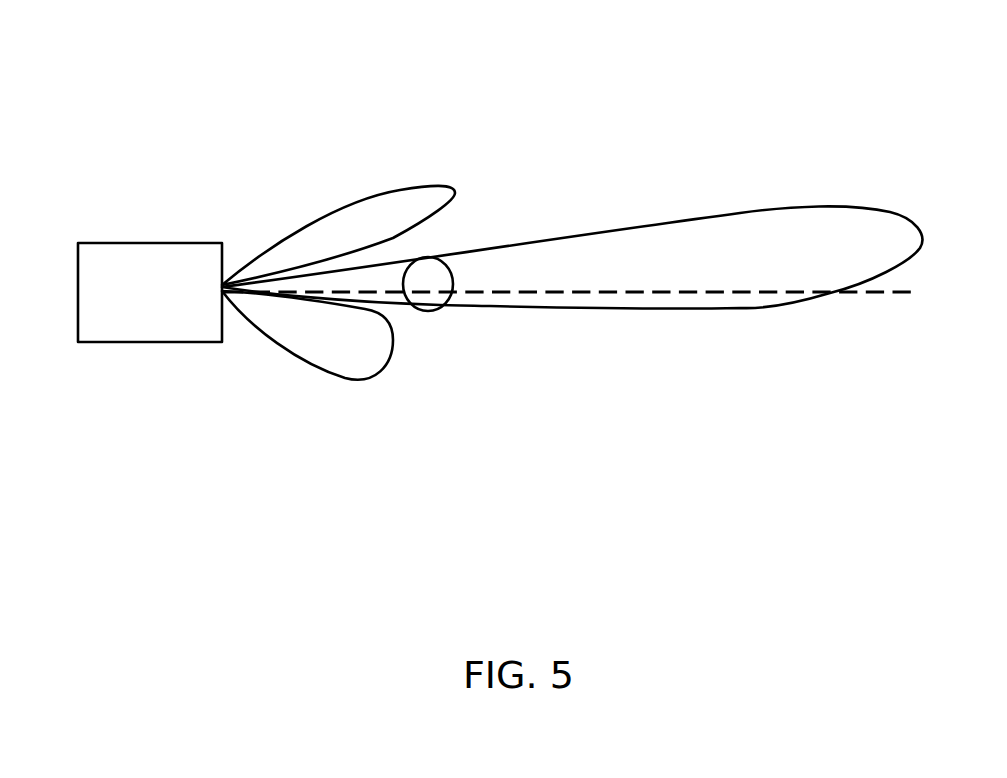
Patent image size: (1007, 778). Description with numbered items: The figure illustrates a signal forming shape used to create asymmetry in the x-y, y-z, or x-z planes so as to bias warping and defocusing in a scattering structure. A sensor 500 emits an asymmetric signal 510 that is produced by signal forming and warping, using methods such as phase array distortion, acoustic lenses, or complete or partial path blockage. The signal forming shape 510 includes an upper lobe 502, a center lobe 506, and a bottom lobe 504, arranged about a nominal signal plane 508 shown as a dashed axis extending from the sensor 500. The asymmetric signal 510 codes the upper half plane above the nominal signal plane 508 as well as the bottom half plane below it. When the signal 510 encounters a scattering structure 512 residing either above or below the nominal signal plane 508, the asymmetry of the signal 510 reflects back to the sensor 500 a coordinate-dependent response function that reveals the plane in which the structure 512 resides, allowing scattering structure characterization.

The sensor 500 is at (152, 293).
The upper lobe 502 is at (355, 233).
The bottom lobe 504 is at (325, 333).
The center lobe 506 is at (783, 222).
The nominal signal plane 508 is at (897, 295).
The asymmetric signal 510 is at (845, 173).
The scattering structure 512 is at (432, 273).